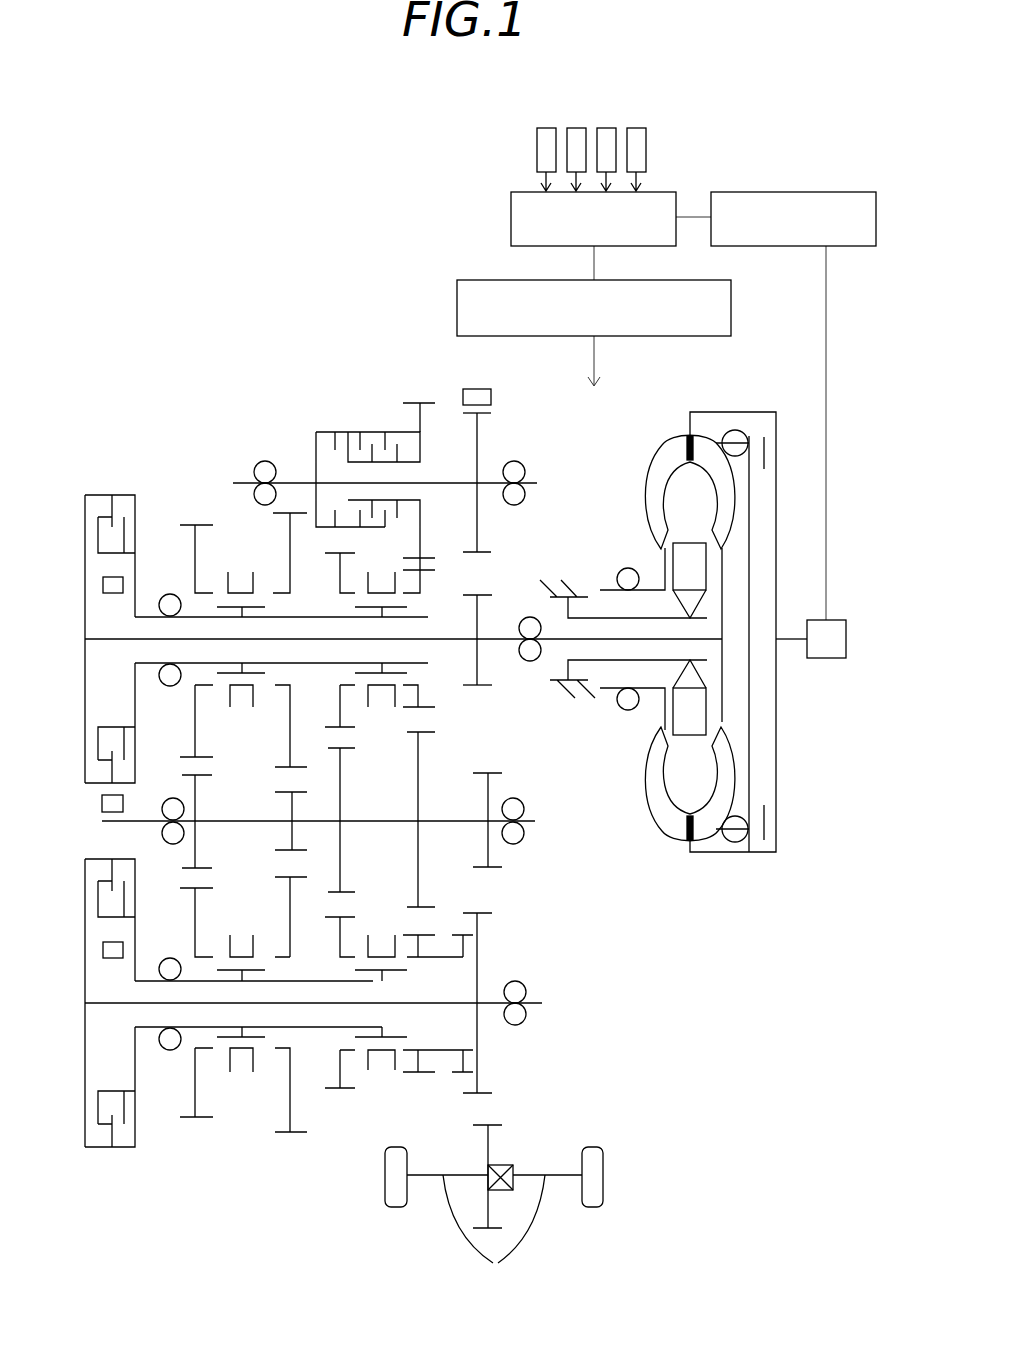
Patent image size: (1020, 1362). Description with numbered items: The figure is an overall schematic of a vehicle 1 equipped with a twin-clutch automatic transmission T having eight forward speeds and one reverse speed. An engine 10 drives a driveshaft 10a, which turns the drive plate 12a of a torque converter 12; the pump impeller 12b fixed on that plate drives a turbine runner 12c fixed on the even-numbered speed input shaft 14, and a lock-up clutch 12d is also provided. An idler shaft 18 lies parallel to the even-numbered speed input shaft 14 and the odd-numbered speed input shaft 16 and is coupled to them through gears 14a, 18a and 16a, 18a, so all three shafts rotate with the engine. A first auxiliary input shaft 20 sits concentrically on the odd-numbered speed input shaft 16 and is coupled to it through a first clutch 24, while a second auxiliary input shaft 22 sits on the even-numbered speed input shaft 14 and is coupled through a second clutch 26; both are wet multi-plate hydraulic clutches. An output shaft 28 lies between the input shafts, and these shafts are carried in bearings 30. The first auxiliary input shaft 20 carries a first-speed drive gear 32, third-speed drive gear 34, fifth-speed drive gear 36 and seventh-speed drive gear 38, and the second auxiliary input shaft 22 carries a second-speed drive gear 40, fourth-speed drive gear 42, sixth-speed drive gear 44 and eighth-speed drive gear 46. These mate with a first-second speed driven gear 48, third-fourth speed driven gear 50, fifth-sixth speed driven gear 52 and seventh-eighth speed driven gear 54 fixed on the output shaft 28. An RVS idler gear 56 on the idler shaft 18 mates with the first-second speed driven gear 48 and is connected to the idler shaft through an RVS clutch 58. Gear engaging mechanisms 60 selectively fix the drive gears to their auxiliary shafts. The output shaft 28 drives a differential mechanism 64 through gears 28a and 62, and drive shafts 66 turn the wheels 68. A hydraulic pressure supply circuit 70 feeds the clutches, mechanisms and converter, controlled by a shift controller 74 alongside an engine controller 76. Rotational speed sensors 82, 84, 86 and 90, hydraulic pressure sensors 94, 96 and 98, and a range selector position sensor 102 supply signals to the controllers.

The vehicle 1 is at (637, 1108).
The transmission T is at (139, 390).
The engine 10 is at (842, 620).
The driveshaft 10a is at (787, 643).
The torque converter 12 is at (687, 617).
The drive plate 12a is at (740, 412).
The pump impeller 12b is at (662, 462).
The turbine runner 12c is at (735, 757).
The lock-up clutch 12d is at (748, 847).
The even-numbered speed input shaft 14 is at (508, 637).
The gear 14a is at (469, 688).
The odd-numbered speed input shaft 16 is at (534, 1003).
The gear 16a is at (488, 912).
The idler shaft 18 is at (527, 472).
The gear 18a is at (488, 552).
The first auxiliary input shaft 20 is at (373, 981).
The second auxiliary input shaft 22 is at (408, 617).
The first clutch 24 is at (122, 1148).
The second clutch 26 is at (122, 495).
The output shaft 28 is at (530, 815).
The gear 28a is at (497, 772).
The bearings 30 is at (527, 497).
The first-speed drive gear 32 is at (425, 933).
The third-speed drive gear 34 is at (337, 917).
The fifth-speed drive gear 36 is at (188, 890).
The seventh-speed drive gear 38 is at (283, 878).
The second-speed drive gear 40 is at (425, 708).
The fourth-speed drive gear 42 is at (333, 725).
The sixth-speed drive gear 44 is at (187, 753).
The eighth-speed drive gear 46 is at (280, 767).
The first-second speed driven gear 48 is at (425, 735).
The third-fourth speed driven gear 50 is at (345, 752).
The fifth-sixth speed driven gear 52 is at (203, 777).
The seventh-eighth speed driven gear 54 is at (297, 793).
The RVS idler gear 56 is at (421, 403).
The RVS clutch 58 is at (327, 432).
The gear engaging mechanism 60 is at (242, 582).
The gear 62 is at (490, 1123).
The differential mechanism 64 is at (500, 1163).
The drive shafts 66 is at (494, 1235).
The wheels 68 is at (383, 1173).
The hydraulic pressure supply circuit 70 is at (511, 280).
The shift controller 74 is at (511, 200).
The engine controller 76 is at (820, 192).
The first rotational speed sensor 82 is at (477, 389).
The second rotational speed sensor 84 is at (113, 958).
The third rotational speed sensor 86 is at (113, 593).
The fourth rotational speed sensor 90 is at (102, 803).
The first hydraulic pressure sensor 94 is at (538, 128).
The second hydraulic pressure sensor 96 is at (576, 128).
The third hydraulic pressure sensor 98 is at (606, 128).
The range selector position sensor 102 is at (636, 128).